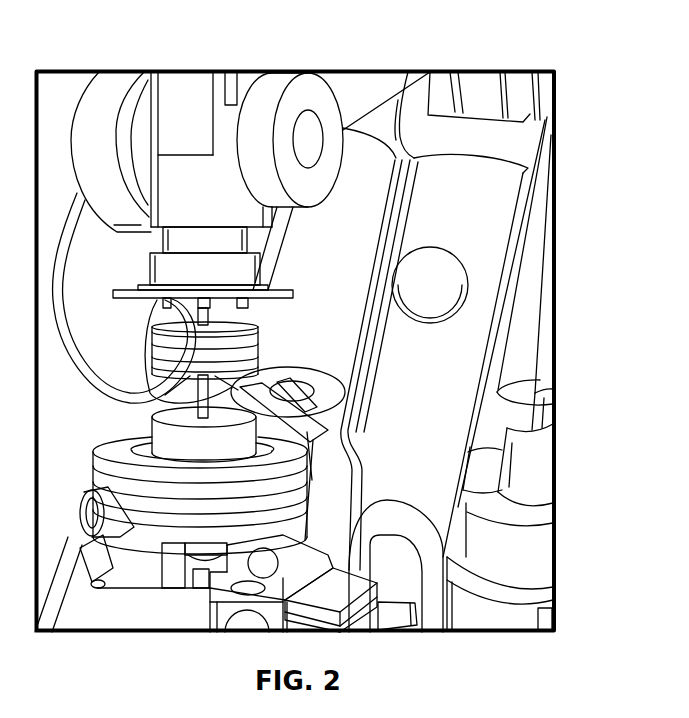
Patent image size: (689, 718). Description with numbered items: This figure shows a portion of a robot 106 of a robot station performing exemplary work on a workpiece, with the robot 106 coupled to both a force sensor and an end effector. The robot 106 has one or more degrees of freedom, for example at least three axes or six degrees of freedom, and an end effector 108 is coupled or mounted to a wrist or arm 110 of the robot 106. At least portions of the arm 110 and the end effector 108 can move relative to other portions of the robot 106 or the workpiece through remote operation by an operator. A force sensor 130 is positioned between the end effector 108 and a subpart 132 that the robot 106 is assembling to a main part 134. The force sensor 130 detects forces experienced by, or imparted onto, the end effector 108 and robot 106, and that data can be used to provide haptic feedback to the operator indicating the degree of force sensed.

The robot 106 is at (582, 49).
The end effector 108 is at (273, 290).
The wrist or arm 110 is at (308, 140).
The force sensor 130 is at (258, 345).
The subpart 132 is at (305, 450).
The main part 134 is at (307, 595).